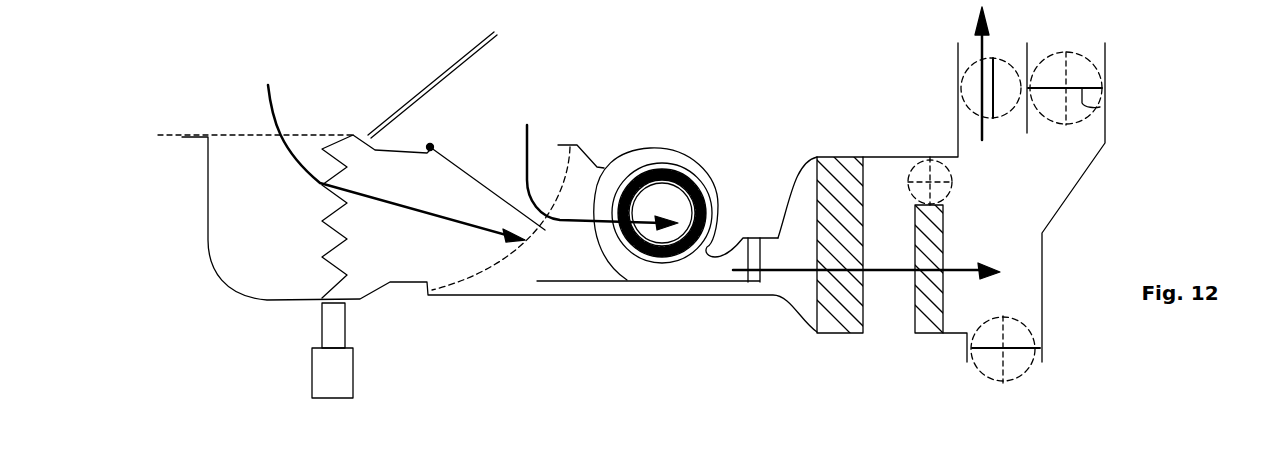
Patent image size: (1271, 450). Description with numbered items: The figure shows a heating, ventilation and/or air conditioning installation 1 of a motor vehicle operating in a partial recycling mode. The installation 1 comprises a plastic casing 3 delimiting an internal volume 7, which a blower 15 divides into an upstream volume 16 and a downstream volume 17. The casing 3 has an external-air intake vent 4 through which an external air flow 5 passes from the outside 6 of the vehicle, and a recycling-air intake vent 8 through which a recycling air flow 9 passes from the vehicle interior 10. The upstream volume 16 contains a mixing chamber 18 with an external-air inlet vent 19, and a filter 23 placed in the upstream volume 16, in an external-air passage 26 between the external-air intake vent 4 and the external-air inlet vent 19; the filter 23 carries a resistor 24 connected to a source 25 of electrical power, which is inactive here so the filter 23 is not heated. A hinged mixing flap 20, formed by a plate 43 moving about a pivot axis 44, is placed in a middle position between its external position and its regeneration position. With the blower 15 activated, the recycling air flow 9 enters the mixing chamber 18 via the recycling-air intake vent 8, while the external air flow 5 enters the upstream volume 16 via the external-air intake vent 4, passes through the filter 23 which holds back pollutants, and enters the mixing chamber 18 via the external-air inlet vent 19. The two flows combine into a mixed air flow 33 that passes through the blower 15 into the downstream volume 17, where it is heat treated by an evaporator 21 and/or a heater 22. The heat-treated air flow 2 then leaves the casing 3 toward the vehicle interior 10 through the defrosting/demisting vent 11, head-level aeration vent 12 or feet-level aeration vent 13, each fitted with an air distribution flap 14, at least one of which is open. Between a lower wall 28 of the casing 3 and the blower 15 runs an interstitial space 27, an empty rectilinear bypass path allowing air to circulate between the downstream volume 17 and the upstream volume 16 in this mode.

The heating, ventilation and/or air conditioning installation 1 is at (803, 127).
The flow of heat-treated air 2 is at (980, 50).
The casing 3 is at (207, 183).
The external-air intake vent 4 is at (287, 135).
The external air flow 5 is at (265, 110).
The outside of the vehicle 6 is at (227, 113).
The internal volume 7 is at (686, 214).
The recycling-air intake vent 8 is at (543, 143).
The recycling air flow 9 is at (523, 135).
The vehicle interior 10 is at (678, 86).
The defrosting/demisting vent 11 is at (985, 365).
The head-level aeration vent 12 is at (1000, 43).
The feet-level aeration vent 13 is at (1092, 50).
The air distribution flap 14 is at (993, 105).
The blower 15 is at (710, 269).
The upstream volume 16 is at (252, 239).
The downstream volume 17 is at (888, 243).
The mixing chamber 18 is at (457, 196).
The external-air inlet vent 19 is at (427, 236).
The mixing flap 20 is at (512, 203).
The evaporator 21 is at (840, 157).
The heater 22 is at (943, 248).
The filter 23 is at (347, 165).
The resistor 24 is at (345, 262).
The source of electrical power 25 is at (332, 350).
The external-air passage 26 is at (330, 126).
The interstitial space 27 is at (618, 283).
The wall 28 is at (717, 297).
The mixed air flow 33 is at (790, 268).
The plate 43 is at (457, 155).
The pivot axis 44 is at (437, 145).